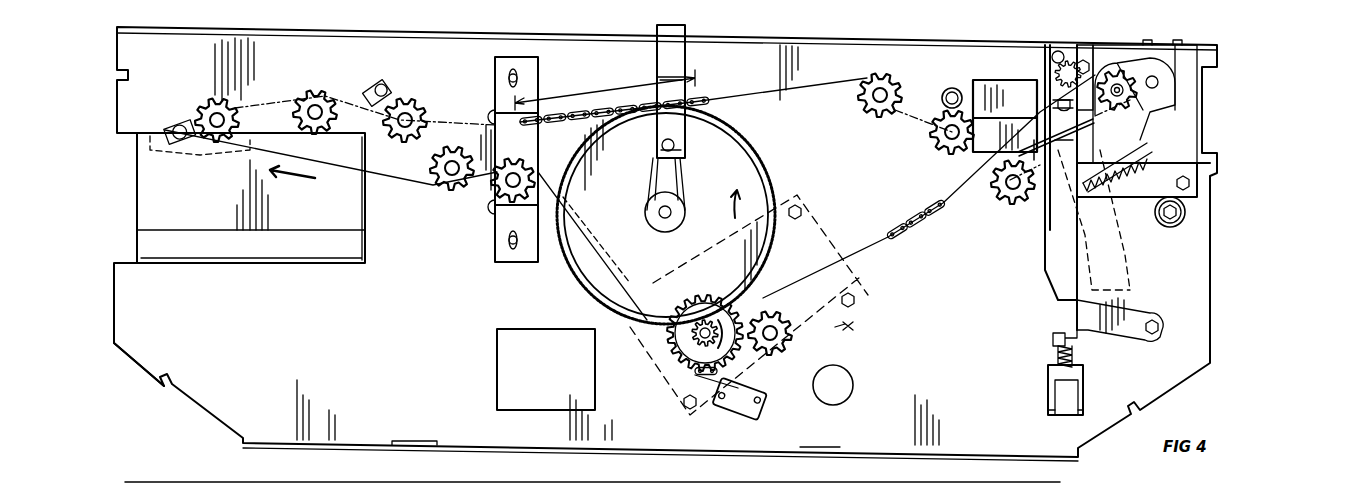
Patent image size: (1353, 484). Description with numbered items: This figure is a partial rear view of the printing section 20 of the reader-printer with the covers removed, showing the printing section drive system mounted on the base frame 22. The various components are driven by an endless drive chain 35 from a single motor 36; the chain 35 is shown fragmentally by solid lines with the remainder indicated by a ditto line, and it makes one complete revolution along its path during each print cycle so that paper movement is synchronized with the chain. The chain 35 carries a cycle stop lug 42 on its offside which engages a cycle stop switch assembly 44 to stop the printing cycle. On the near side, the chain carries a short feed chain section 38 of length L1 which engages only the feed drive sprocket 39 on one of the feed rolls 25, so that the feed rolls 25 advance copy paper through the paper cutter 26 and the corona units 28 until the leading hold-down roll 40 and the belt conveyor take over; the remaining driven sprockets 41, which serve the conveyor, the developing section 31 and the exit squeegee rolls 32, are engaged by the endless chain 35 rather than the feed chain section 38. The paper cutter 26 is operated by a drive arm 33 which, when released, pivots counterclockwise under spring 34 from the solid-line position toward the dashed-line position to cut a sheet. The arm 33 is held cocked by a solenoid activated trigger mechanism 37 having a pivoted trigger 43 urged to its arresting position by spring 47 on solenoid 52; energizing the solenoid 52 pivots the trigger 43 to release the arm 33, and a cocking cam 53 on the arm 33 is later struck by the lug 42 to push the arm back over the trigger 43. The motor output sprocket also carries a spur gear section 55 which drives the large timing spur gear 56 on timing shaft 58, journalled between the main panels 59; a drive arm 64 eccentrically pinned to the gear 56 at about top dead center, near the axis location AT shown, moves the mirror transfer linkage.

The printing section 20 is at (103, 312).
The base frame 22 is at (182, 405).
The feed rolls 25 is at (1117, 72).
The paper cutter 26 is at (1066, 88).
The corona units 28 is at (1018, 73).
The developing section 31 is at (264, 267).
The exit squeegee rolls 32 is at (228, 120).
The drive arm 33 is at (1047, 245).
The spring 34 is at (1100, 172).
The drive chain 35 is at (918, 224).
The motor 36 is at (853, 326).
The trigger mechanism 37 is at (1043, 351).
The feed chain section 38 is at (550, 124).
The feed drive sprocket 39 is at (1142, 112).
The leading hold-down roll 40 is at (952, 89).
The driven sprockets 41 is at (222, 108).
The cycle stop lug 42 is at (701, 373).
The trigger 43 is at (1134, 338).
The cycle stop switch assembly 44 is at (766, 395).
The spring 47 is at (1075, 356).
The solenoid 52 is at (1075, 388).
The cocking cam 53 is at (1086, 128).
The spur gear section 55 is at (690, 316).
The timing spur gear 56 is at (758, 148).
The timing shaft 58 is at (667, 222).
The main panels 59 is at (417, 366).
The drive arm 64 is at (686, 56).
The length of feed chain section L1 is at (605, 90).
The axis point AT is at (680, 216).